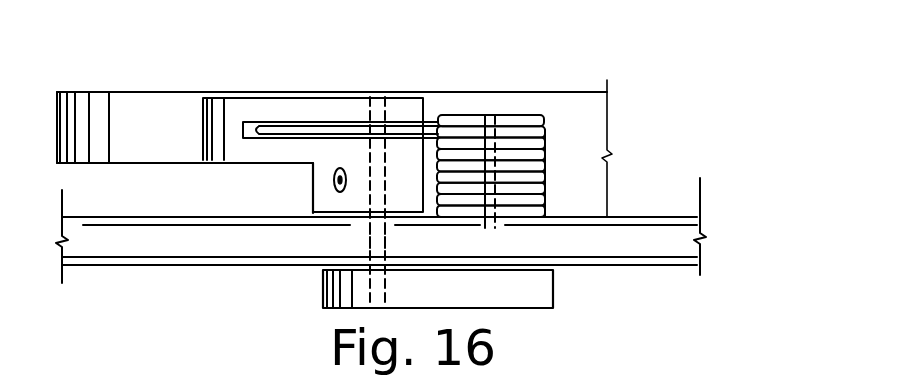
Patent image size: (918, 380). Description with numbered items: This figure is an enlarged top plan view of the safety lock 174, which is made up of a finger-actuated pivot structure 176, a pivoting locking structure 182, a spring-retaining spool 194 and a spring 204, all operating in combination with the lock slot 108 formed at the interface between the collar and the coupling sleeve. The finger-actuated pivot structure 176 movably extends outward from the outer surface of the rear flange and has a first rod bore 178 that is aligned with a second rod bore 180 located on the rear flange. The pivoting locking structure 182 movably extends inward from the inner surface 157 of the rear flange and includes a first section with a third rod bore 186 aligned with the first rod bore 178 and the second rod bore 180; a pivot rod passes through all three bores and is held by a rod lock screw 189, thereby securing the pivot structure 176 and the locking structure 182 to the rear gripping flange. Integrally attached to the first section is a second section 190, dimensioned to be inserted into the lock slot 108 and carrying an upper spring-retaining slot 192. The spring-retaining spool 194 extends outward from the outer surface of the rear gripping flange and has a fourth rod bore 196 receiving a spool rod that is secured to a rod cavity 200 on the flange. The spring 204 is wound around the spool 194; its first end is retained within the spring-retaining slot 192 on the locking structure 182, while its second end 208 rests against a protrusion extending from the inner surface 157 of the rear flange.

The lock slot 108 is at (125, 115).
The inner surface 157 is at (662, 218).
The safety lock 174 is at (553, 130).
The finger-actuated pivot structure 176 is at (540, 295).
The first rod bore 178 is at (367, 290).
The second rod bore 180 is at (367, 242).
The pivoting locking structure 182 is at (285, 98).
The third rod bore 186 is at (379, 206).
The rod lock screw 189 is at (307, 187).
The second section 190 is at (225, 107).
The upper spring-retaining slot 192 is at (328, 122).
The spring-retaining spool 194 is at (551, 118).
The fourth rod bore 196 is at (487, 129).
The rod cavity 200 is at (503, 227).
The spring 204 is at (545, 147).
The second end 208 is at (242, 188).